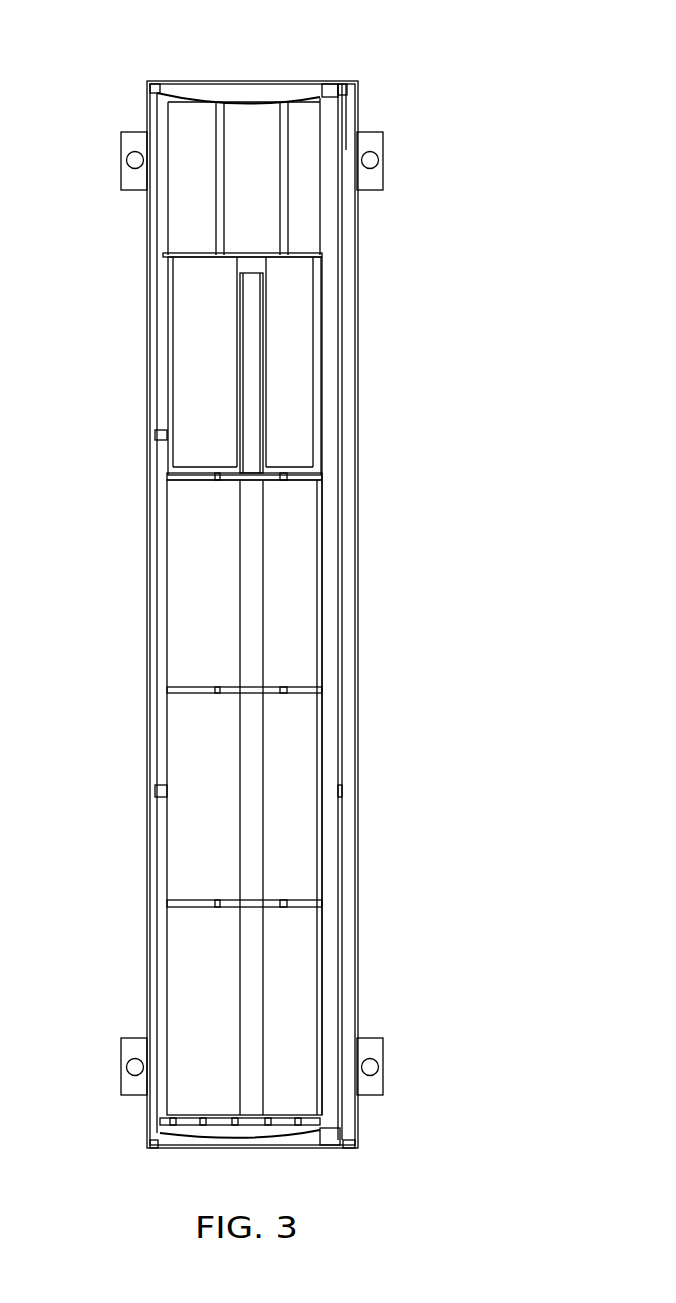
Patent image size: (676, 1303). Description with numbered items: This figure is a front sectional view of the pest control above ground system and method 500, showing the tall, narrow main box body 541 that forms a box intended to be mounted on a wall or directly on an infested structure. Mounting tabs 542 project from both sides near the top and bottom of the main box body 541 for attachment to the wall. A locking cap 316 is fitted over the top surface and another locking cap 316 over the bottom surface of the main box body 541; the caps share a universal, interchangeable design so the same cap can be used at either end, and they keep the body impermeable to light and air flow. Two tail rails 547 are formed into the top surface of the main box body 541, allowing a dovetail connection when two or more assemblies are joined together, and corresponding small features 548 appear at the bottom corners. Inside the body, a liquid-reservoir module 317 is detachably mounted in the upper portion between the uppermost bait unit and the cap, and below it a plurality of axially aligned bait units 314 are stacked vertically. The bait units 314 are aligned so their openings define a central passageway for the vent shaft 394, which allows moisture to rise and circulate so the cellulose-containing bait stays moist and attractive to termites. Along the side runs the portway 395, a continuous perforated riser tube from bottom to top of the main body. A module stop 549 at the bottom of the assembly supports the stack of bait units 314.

The bait unit 314 is at (188, 755).
The locking cap 316 is at (250, 97).
The liquid-reservoir module 317 is at (190, 362).
The vent shaft 394 is at (250, 343).
The portway 395 is at (326, 381).
The pest control above ground system and method 500 is at (502, 94).
The main box body 541 is at (148, 566).
The mounting tab 542 is at (127, 139).
The tail rail 547 is at (152, 82).
The lower clip 548 is at (152, 1150).
The module stop 549 is at (300, 1128).